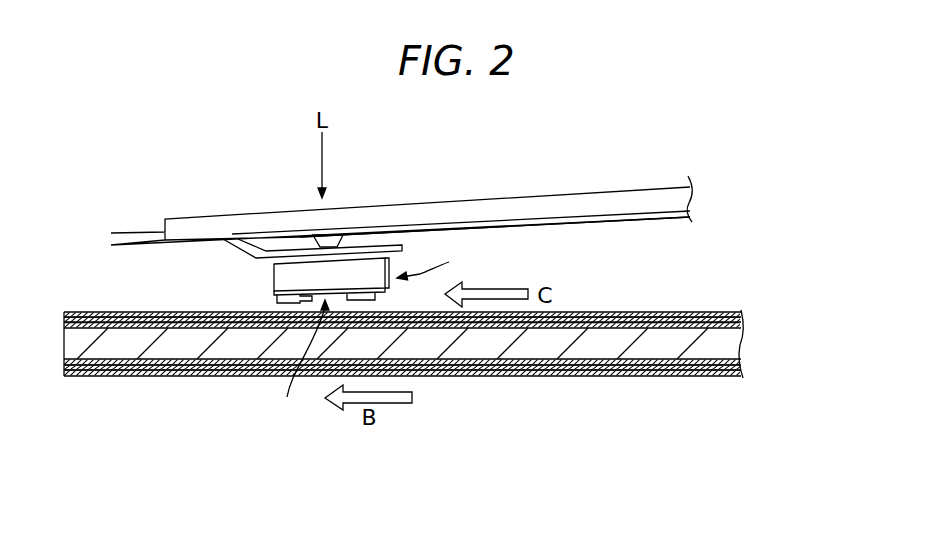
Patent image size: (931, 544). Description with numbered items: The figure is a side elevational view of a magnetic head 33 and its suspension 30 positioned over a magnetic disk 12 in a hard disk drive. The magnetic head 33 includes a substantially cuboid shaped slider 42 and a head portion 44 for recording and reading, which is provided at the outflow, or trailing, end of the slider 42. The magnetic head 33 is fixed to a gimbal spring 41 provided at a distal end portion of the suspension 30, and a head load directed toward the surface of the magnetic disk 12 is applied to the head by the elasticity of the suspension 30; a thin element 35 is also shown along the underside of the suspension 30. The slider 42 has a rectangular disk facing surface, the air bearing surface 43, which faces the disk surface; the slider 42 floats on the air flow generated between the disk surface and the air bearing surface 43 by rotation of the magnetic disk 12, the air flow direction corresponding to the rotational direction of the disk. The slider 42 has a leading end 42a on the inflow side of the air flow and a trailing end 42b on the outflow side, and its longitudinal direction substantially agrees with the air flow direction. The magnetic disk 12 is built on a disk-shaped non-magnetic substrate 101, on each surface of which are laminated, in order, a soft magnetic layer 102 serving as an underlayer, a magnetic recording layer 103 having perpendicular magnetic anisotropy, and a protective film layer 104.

The magnetic disk 12 is at (444, 333).
The suspension 30 is at (572, 203).
The magnetic head 33 is at (437, 264).
The thin sheet on plate 35 is at (637, 218).
The gimbal spring 41 is at (391, 246).
The slider 42 is at (322, 240).
The leading end 42a is at (388, 266).
The trailing end 42b is at (277, 294).
The air bearing surface 43 is at (299, 360).
The head portion 44 is at (285, 278).
The substrate 101 is at (650, 351).
The soft magnetic layer 102 is at (740, 333).
The magnetic recording layer 103 is at (668, 313).
The protective film layer 104 is at (737, 312).